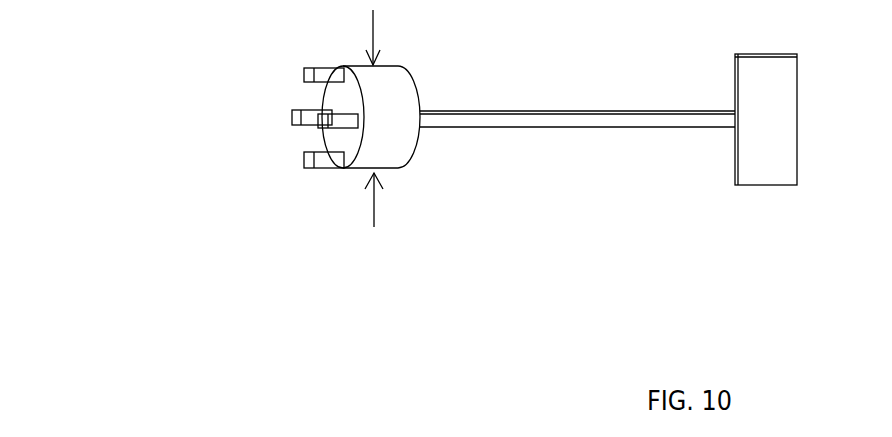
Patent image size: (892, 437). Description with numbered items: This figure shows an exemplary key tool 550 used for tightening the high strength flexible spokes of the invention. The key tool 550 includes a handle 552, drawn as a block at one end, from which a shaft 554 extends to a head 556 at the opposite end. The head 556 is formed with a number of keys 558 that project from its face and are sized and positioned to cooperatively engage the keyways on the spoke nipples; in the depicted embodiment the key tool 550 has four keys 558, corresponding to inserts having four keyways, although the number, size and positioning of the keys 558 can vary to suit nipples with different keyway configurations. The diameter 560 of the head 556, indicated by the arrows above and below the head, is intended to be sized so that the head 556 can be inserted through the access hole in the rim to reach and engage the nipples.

The key tool 550 is at (232, 73).
The handle 552 is at (772, 186).
The shaft 554 is at (482, 128).
The head 556 is at (398, 169).
The keys 558 is at (303, 168).
The diameter 560 is at (373, 33).